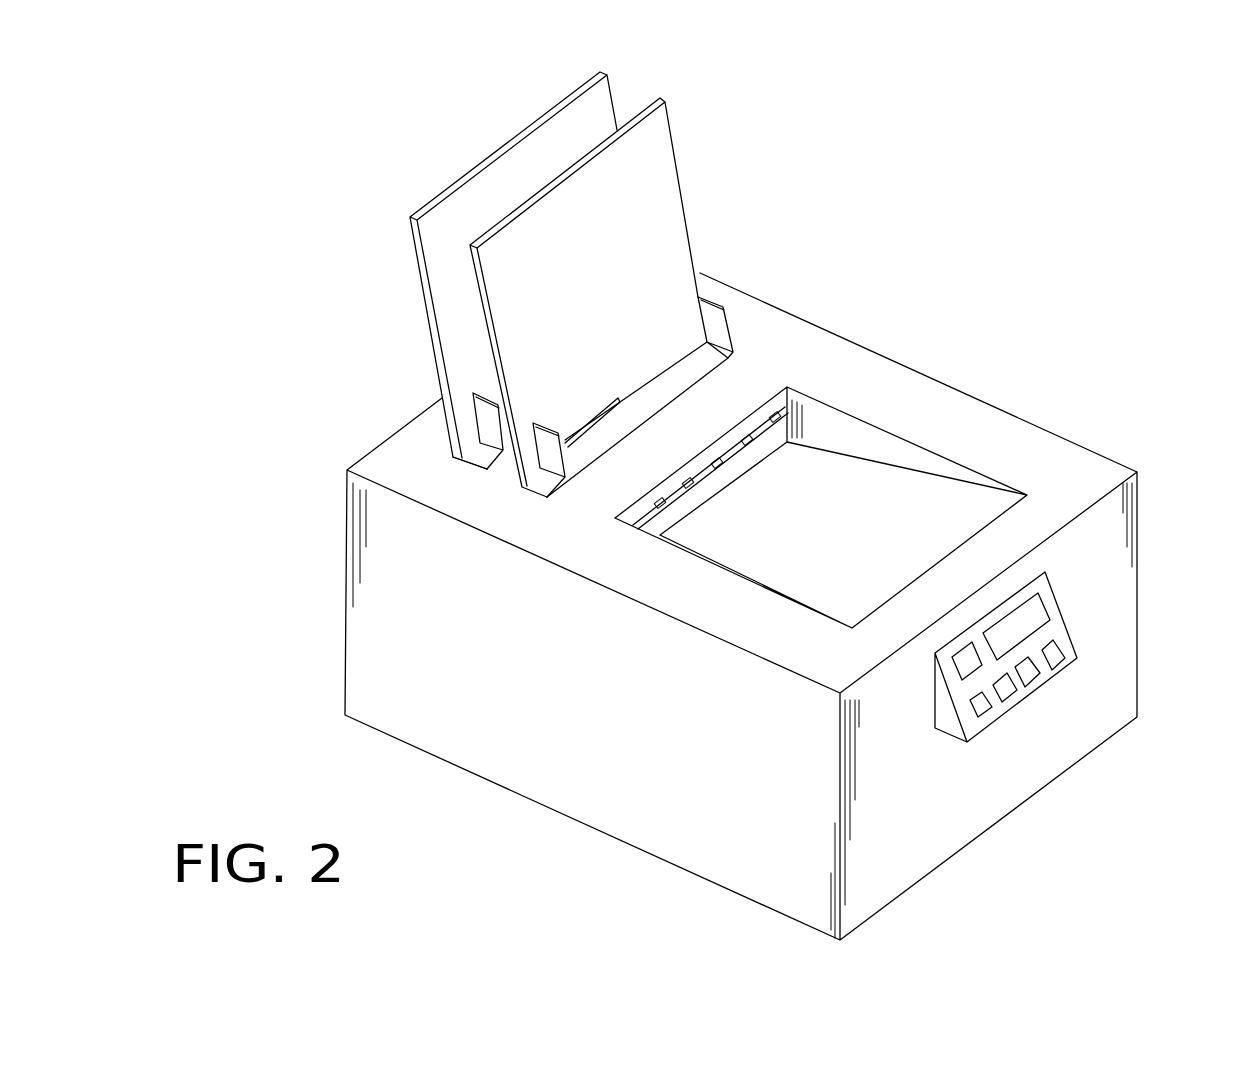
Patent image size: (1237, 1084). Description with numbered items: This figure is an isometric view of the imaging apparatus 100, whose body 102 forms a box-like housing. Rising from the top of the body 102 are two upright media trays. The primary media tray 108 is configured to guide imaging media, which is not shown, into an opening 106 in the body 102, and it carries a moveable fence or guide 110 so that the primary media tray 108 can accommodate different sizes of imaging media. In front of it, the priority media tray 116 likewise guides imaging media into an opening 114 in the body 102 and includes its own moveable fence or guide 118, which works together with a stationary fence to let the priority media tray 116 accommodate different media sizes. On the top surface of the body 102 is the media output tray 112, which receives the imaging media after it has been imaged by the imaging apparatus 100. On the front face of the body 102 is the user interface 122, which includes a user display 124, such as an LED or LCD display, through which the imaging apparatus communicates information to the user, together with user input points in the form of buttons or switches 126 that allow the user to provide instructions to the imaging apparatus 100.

The imaging apparatus 100 is at (1126, 203).
The body 102 is at (1127, 590).
The opening 106 is at (486, 460).
The primary media tray 108 is at (428, 295).
The moveable fence or guide 110 is at (488, 423).
The media output tray 112 is at (966, 495).
The opening 114 is at (622, 428).
The priority media tray 116 is at (676, 203).
The moveable fence or guide 118 is at (570, 460).
The user interface 122 is at (952, 728).
The user display 124 is at (1035, 610).
The buttons or switches 126 is at (1052, 648).